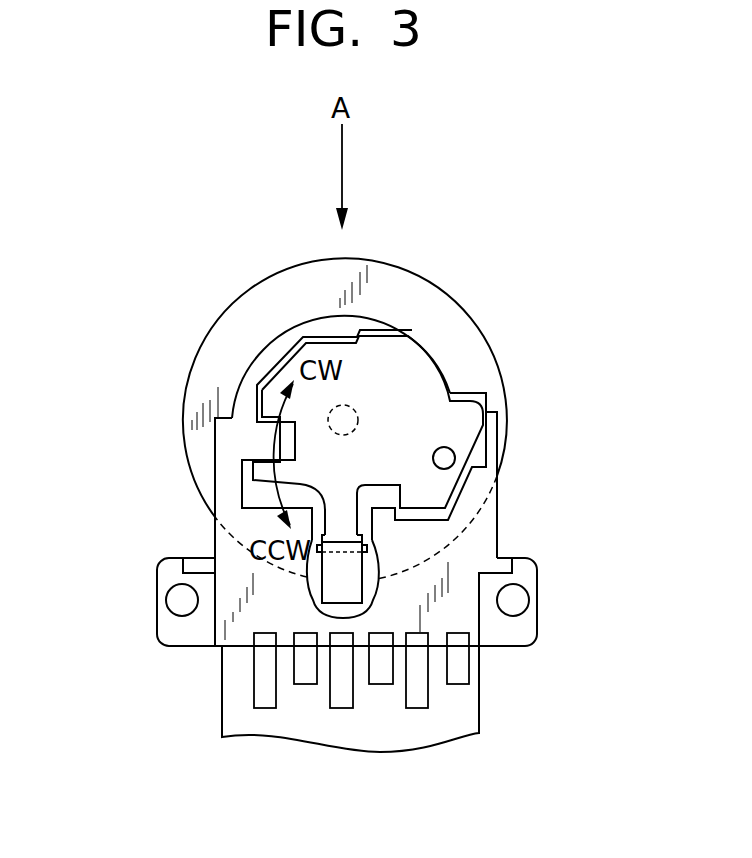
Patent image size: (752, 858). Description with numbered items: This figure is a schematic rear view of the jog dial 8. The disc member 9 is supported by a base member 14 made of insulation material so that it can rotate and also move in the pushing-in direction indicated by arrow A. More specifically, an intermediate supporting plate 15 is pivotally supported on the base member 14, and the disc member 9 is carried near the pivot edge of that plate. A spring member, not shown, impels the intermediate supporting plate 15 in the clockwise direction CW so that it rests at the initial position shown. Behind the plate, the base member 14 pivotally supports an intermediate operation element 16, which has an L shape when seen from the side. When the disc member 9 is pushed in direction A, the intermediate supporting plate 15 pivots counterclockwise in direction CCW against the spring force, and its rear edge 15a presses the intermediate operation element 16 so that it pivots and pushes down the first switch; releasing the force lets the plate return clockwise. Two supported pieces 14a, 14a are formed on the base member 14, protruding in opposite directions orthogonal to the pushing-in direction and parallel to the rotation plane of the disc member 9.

The jog dial 8 is at (222, 282).
The disc member 9 is at (421, 275).
The base member 14 is at (488, 517).
The supported piece 14a is at (157, 603).
The intermediate supporting plate 15 is at (424, 357).
The rear edge of the intermediate supporting plate 15a is at (343, 535).
The intermediate operation element 16 is at (312, 595).